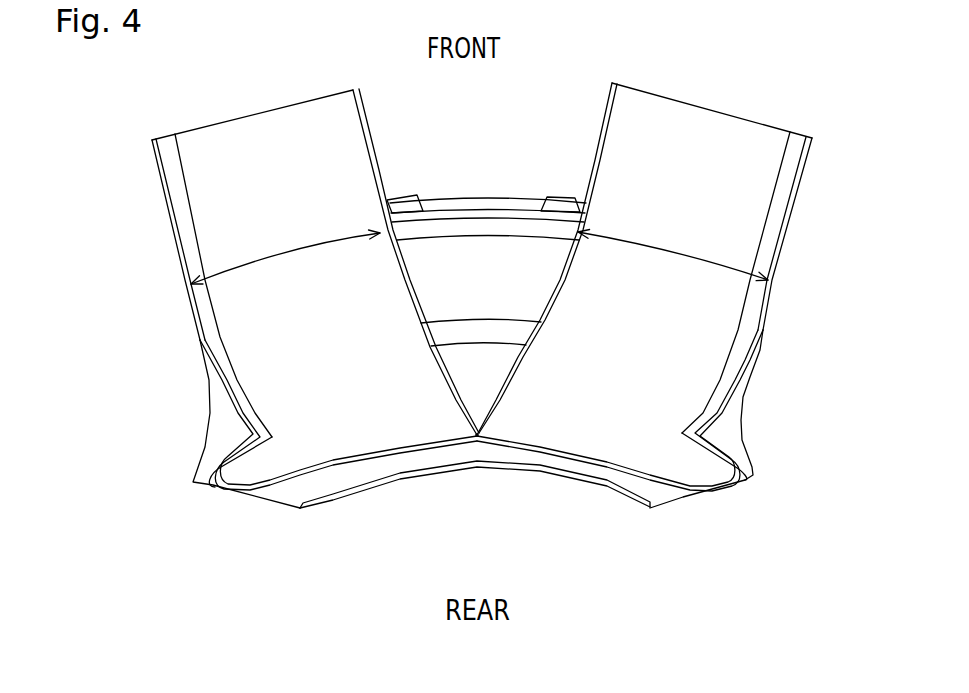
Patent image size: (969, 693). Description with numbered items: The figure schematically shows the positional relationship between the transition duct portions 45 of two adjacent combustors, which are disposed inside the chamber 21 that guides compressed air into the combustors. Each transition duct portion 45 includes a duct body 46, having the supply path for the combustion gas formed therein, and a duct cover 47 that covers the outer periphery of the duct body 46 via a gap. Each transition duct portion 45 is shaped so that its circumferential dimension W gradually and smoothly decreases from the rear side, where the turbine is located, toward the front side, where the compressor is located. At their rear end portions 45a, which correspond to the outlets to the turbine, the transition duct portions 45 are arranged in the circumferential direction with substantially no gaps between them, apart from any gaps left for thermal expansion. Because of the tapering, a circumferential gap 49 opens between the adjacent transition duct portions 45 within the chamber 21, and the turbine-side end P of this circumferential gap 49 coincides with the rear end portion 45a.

The chamber 21 is at (483, 108).
The transition duct portion 45 is at (277, 460).
The rear end portion 45a is at (316, 476).
The duct body 46 is at (217, 331).
The duct cover 47 is at (160, 183).
The circumferential gap 49 is at (493, 287).
The turbine-side end P is at (477, 437).
The circumferential dimension W is at (316, 243).